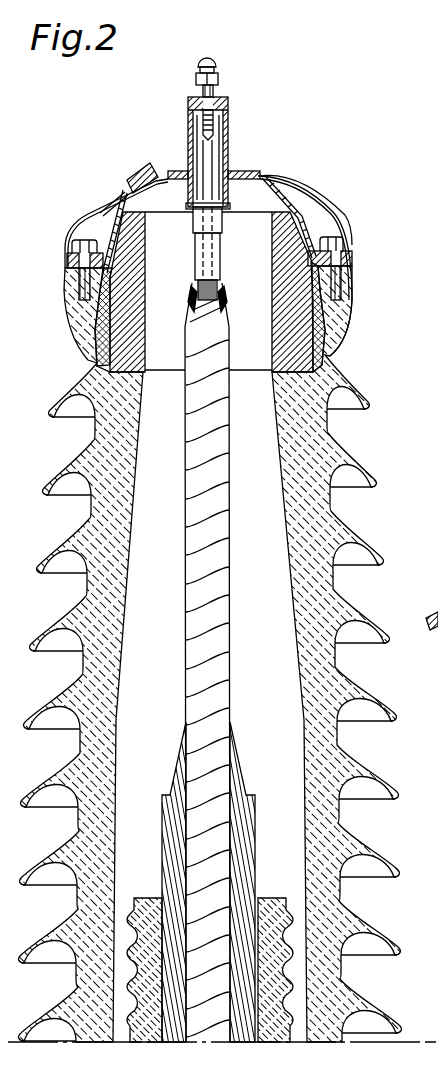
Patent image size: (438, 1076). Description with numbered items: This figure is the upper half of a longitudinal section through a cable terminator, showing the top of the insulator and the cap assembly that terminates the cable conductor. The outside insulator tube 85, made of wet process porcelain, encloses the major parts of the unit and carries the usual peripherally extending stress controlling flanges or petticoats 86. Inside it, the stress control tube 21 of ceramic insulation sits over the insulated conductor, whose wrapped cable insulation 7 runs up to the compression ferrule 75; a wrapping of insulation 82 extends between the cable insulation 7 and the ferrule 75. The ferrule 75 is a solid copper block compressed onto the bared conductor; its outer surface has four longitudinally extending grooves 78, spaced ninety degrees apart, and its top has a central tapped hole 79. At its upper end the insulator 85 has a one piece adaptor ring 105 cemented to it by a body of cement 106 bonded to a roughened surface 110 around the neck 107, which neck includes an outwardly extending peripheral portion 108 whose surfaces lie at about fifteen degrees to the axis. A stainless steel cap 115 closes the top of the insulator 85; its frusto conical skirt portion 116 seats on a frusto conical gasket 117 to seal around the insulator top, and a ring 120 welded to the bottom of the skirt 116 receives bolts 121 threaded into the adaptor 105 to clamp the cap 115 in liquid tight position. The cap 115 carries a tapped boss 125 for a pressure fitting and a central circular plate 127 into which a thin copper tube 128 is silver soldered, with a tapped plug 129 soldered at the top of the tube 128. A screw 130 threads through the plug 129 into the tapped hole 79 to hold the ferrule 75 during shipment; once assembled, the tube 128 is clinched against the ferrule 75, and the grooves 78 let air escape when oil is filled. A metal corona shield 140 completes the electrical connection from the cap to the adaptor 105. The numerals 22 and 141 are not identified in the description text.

The wrapped cable insulation 7 is at (218, 507).
The stress control tube 21 is at (146, 900).
The crimp sleeve 22 is at (208, 882).
The compression ferrule 75 is at (222, 246).
The longitudinally extending grooves 78 is at (219, 192).
The tapped hole 79 is at (188, 125).
The wrapping of insulation 82 is at (224, 302).
The outside insulator tube 85 is at (336, 532).
The stress controlling flanges or petticoats 86 is at (40, 622).
The adaptor ring 105 is at (326, 325).
The body of cement 106 is at (322, 348).
The neck 107 is at (276, 318).
The outwardly extending peripheral portion 108 is at (112, 278).
The roughened surface 110 is at (108, 336).
The stainless steel cap 115 is at (270, 182).
The frusto conical skirt portion 116 is at (302, 226).
The frusto conical gasket 117 is at (294, 216).
The ring 120 is at (348, 259).
The bolts 121 is at (343, 276).
The tapped boss 125 is at (130, 178).
The central circular plate 127 is at (240, 172).
The thin copper tube 128 is at (229, 133).
The tapped plug 129 is at (220, 95).
The screw 130 is at (198, 92).
The metal corona shield 140 is at (86, 232).
The bolt 141 is at (85, 270).